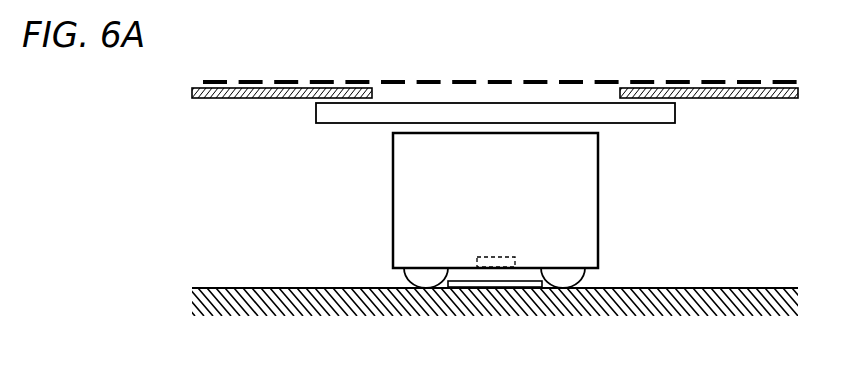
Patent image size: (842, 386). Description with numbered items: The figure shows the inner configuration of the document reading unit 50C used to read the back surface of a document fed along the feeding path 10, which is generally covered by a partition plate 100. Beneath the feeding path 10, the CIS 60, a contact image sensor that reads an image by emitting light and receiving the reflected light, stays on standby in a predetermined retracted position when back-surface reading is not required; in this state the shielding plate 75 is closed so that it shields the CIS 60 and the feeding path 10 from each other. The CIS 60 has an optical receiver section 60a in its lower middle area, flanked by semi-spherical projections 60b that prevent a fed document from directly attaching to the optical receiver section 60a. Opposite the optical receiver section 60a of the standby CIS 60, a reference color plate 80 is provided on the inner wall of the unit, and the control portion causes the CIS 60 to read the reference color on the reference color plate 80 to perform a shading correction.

The feeding path 10 is at (258, 78).
The document reading unit 50C is at (638, 47).
The partition plate 100 is at (222, 99).
The shielding plate 75 is at (339, 104).
The CIS 60 is at (598, 192).
The optical receiver section 60a is at (495, 267).
The semi-spherical projections 60b is at (428, 282).
The reference color plate 80 is at (470, 287).